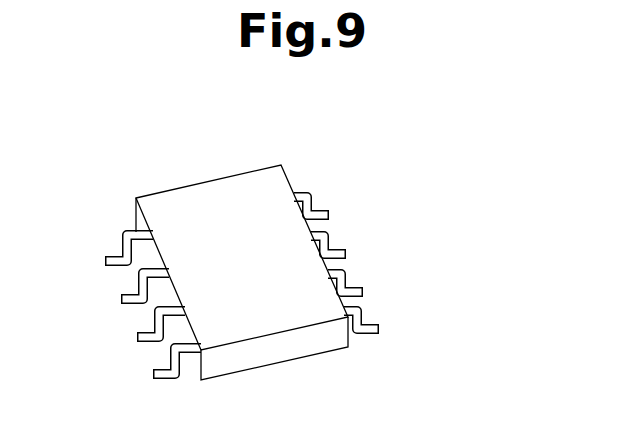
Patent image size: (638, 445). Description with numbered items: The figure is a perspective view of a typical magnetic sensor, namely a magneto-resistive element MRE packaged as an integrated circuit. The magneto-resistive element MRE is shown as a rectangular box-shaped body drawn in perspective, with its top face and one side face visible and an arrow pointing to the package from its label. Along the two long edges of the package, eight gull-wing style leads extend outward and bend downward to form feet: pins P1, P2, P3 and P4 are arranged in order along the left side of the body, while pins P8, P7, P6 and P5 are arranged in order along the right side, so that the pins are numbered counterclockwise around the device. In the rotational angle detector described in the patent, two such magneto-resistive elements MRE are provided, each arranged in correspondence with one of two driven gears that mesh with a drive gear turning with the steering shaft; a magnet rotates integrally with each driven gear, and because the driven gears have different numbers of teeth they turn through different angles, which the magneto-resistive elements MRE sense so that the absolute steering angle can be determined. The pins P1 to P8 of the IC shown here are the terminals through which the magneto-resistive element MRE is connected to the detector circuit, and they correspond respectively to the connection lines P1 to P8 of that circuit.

The magneto-resistive element MRE is at (170, 175).
The pin P1 is at (110, 255).
The pin P2 is at (127, 292).
The pin P3 is at (141, 331).
The pin P4 is at (159, 368).
The pin P5 is at (380, 315).
The pin P6 is at (364, 280).
The pin P7 is at (348, 240).
The pin P8 is at (331, 202).